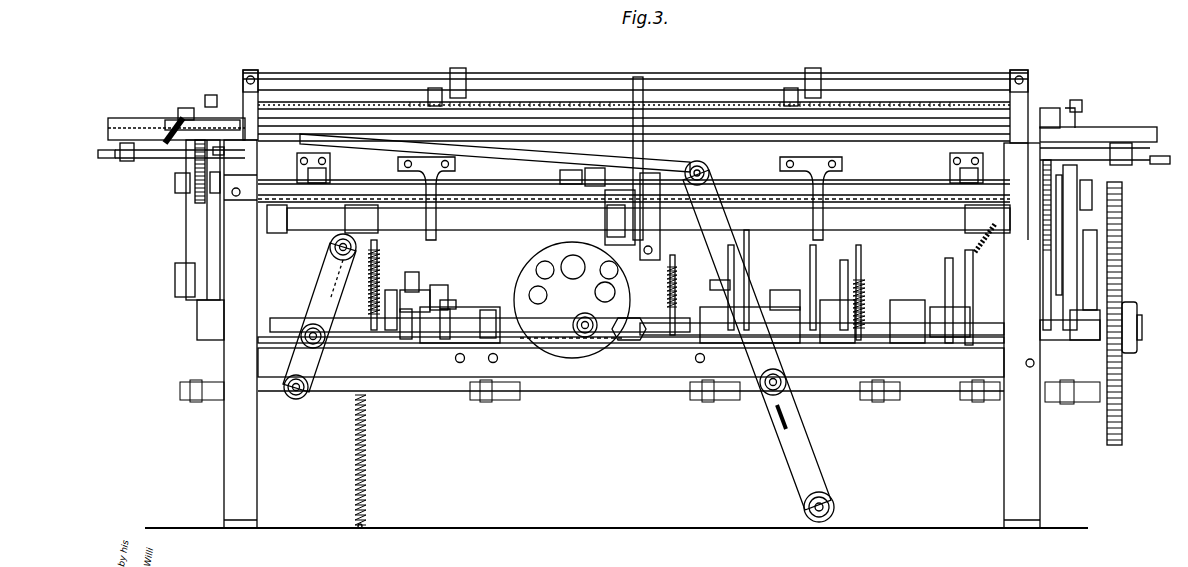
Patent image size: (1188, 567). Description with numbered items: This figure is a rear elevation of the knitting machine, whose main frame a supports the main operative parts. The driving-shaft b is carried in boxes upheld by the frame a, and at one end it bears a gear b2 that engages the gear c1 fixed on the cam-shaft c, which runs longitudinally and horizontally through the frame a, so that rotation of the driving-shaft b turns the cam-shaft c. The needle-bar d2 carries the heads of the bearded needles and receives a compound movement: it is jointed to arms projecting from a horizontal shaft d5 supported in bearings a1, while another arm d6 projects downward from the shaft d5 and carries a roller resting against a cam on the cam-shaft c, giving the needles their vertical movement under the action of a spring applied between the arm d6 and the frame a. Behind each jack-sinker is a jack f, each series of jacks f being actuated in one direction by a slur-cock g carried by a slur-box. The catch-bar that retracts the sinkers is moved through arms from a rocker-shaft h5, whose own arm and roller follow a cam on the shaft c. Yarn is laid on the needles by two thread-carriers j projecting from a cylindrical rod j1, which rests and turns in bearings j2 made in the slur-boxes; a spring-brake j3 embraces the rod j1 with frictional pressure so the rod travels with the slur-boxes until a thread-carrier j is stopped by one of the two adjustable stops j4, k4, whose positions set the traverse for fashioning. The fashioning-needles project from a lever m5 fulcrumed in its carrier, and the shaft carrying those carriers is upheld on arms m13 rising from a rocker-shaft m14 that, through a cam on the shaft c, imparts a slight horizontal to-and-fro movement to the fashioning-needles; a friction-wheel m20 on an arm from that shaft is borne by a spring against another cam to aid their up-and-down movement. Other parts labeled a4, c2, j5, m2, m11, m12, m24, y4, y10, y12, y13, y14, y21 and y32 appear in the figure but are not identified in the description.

The main frame a is at (632, 299).
The main cross-bar a1 is at (1105, 141).
The rod a4 is at (171, 139).
The driving-shaft b is at (194, 229).
The gear b2 is at (1070, 250).
The cam-shaft c is at (695, 314).
The gear c1 is at (635, 88).
The graduated rail c2 is at (634, 99).
The needle-bar d2 is at (626, 169).
The horizontal shaft d5 is at (639, 168).
The arm d6 is at (453, 176).
The jack f is at (628, 87).
The slur-cock g is at (1124, 313).
The rocker-shaft h5 is at (638, 221).
The thread-carrier j is at (377, 285).
The cylindrical rod j1 is at (202, 108).
The bearings j2 is at (319, 316).
The spring-brake j3 is at (758, 341).
The adjustable stop j4 is at (606, 198).
The rails j5 is at (634, 128).
The adjustable stop k4 is at (364, 461).
The spring m2 is at (867, 292).
The lever m5 is at (680, 295).
The centre post m11 is at (632, 168).
The rod m12 is at (603, 296).
The arms m13 is at (836, 287).
The rocker-shaft m14 is at (634, 191).
The friction-wheel m20 is at (970, 284).
The bracket m24 is at (1060, 110).
The inclined bar y4 is at (495, 153).
The shaft collars y10 is at (640, 390).
The lever bar y12 is at (631, 328).
The pivot hub y13 is at (567, 313).
The perforated wheel y14 is at (572, 300).
The block y21 is at (449, 301).
The lever bar y32 is at (480, 324).